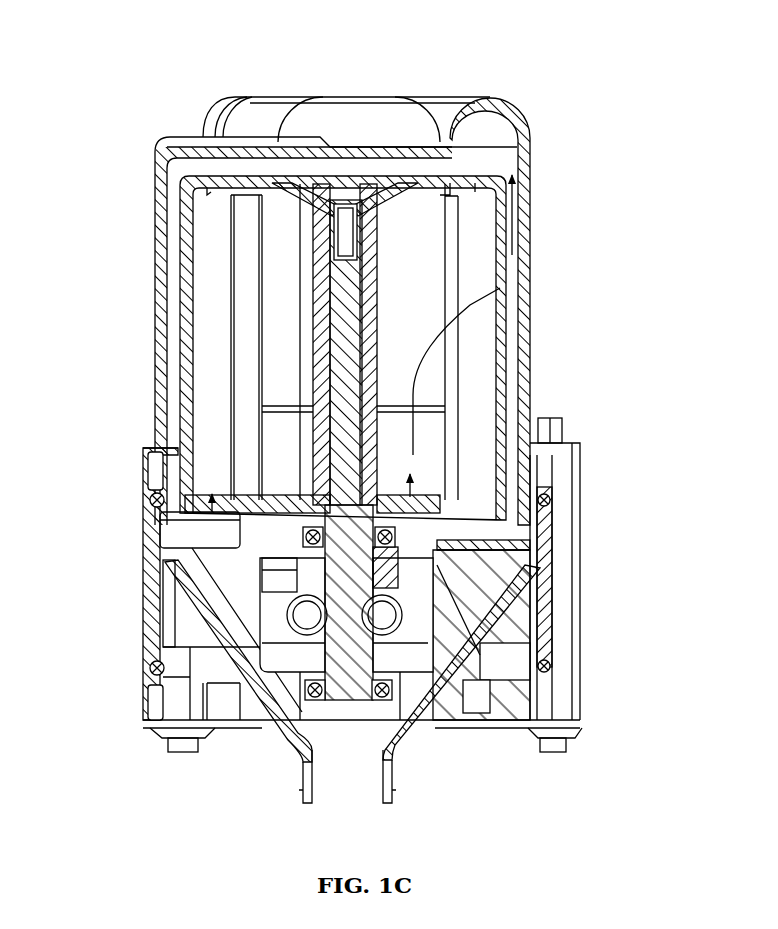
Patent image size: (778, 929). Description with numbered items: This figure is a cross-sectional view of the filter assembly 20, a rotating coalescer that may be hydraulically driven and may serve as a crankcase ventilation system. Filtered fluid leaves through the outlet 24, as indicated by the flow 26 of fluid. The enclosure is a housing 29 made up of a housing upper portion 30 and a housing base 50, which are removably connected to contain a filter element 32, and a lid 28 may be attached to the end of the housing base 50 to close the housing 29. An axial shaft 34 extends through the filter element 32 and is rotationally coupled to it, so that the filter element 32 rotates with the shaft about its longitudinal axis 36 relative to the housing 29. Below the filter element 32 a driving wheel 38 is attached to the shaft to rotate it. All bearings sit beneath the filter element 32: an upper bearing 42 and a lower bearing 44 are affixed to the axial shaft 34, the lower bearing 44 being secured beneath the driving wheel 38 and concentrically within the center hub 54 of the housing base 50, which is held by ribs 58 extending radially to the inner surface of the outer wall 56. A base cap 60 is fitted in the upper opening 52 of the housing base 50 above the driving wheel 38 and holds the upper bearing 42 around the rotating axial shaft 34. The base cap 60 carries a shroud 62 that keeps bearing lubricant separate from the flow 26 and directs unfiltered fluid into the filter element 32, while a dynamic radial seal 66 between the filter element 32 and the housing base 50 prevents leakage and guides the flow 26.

The filter assembly 20 is at (188, 36).
The outlet 24 is at (206, 114).
The flow 26 is at (534, 233).
The lid 28 is at (146, 704).
The housing 29 is at (154, 191).
The housing upper portion 30 is at (160, 266).
The filter element 32 is at (512, 342).
The axial shaft 34 is at (320, 420).
The longitudinal axis 36 is at (328, 385).
The driving wheel 38 is at (287, 617).
The upper bearing 42 is at (168, 452).
The lower bearing 44 is at (305, 722).
The housing base 50 is at (142, 576).
The upper opening 52 is at (537, 476).
The center hub 54 is at (411, 722).
The outer wall 56 is at (548, 548).
The ribs 58 is at (160, 632).
The base cap 60 is at (562, 447).
The shroud 62 is at (540, 660).
The seal 66 is at (156, 498).